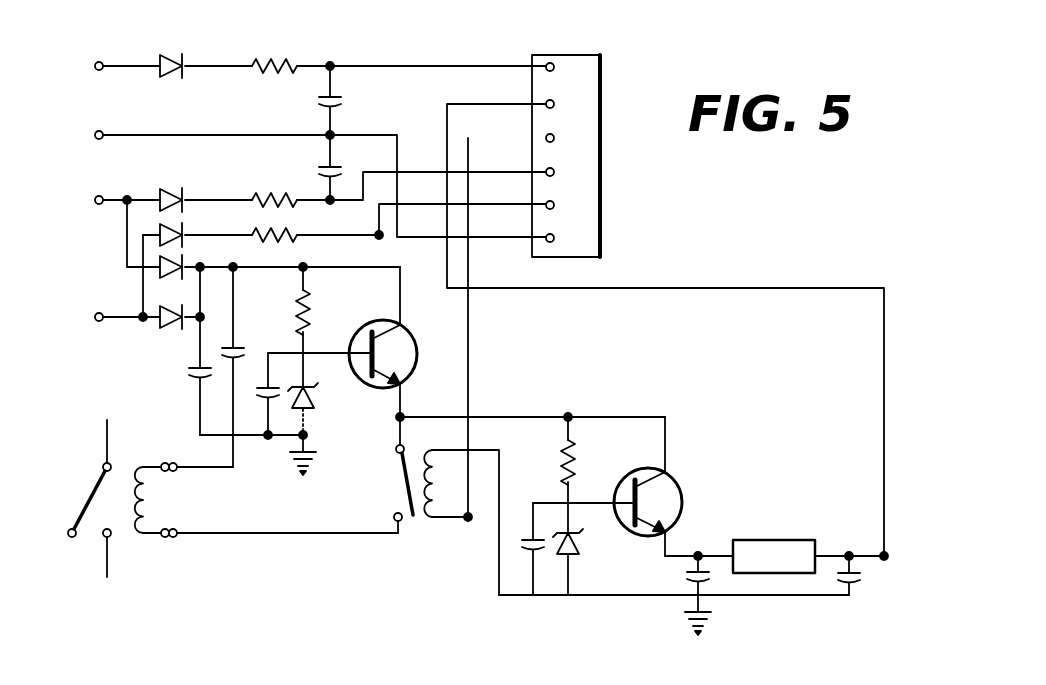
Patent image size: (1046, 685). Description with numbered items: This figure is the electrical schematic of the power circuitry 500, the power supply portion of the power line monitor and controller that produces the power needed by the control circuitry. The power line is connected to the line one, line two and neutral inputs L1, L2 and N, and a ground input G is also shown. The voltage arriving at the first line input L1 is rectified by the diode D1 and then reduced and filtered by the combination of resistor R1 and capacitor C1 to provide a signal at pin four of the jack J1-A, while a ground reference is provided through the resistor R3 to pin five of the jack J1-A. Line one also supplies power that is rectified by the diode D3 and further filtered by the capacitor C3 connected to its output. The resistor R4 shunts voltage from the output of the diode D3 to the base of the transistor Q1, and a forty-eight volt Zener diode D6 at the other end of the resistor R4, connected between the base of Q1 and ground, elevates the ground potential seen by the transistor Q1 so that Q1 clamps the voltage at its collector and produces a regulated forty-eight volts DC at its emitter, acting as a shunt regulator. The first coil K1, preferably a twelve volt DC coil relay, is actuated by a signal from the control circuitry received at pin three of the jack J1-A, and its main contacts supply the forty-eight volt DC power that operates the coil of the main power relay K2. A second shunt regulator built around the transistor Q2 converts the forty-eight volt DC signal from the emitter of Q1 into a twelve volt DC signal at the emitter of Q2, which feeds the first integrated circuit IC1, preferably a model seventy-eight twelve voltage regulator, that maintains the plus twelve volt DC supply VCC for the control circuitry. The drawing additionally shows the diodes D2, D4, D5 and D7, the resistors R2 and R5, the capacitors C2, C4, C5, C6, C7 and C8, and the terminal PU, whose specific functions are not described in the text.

The power circuitry 500 is at (668, 253).
The line 2 input L2 is at (111, 67).
The line 1 input L1 is at (111, 201).
The neutral input N is at (310, 180).
The ground input terminal G is at (118, 318).
The diode D1 is at (204, 188).
The diode D2 is at (204, 53).
The diode D3 is at (280, 259).
The diode D4 is at (197, 227).
The diode D5 is at (163, 329).
The Zener diode D6 is at (318, 394).
The zener diode D7 is at (582, 549).
The resistor R1 is at (290, 186).
The resistor R2 is at (291, 50).
The resistor R3 is at (399, 223).
The resistor R4 is at (285, 310).
The resistor R5 is at (551, 460).
The capacitor C1 is at (317, 167).
The capacitor C2 is at (345, 100).
The capacitor C3 is at (246, 367).
The capacitor C4 is at (257, 394).
The capacitor C5 is at (524, 549).
The capacitor C6 is at (683, 595).
The capacitor C7 is at (863, 575).
The capacitor C8 is at (182, 351).
The transistor Q1 is at (395, 342).
The transistor Q2 is at (660, 486).
The first coil K1 is at (446, 506).
The main power relay K2 is at (233, 498).
The first integrated circuit IC1 is at (774, 545).
The jack J1-A is at (566, 144).
The pickup terminal PU is at (467, 343).
The Vcc VCC is at (692, 331).